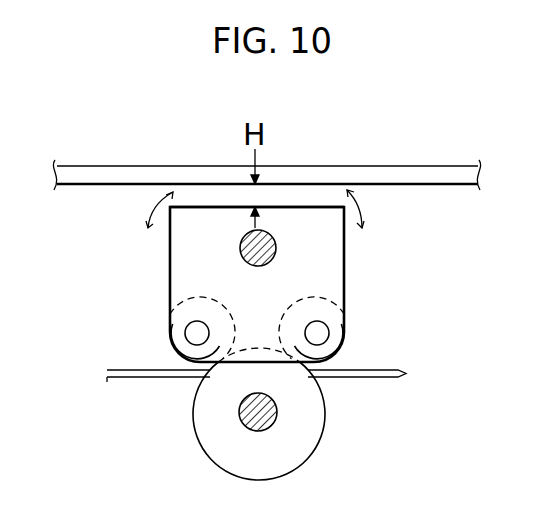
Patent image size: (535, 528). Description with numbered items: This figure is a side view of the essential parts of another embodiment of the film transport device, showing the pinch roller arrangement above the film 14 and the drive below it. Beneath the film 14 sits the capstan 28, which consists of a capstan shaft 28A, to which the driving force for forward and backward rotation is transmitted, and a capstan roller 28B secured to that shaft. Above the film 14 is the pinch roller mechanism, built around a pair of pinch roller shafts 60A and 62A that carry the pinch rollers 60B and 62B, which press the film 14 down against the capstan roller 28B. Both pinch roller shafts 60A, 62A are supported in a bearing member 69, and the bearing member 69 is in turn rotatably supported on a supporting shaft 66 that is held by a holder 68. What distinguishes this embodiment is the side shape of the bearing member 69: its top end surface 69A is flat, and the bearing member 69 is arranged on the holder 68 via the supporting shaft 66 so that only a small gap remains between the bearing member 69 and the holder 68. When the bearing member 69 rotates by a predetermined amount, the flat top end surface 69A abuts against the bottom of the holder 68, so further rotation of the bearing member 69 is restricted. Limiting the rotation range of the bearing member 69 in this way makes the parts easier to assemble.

The film 14 is at (380, 362).
The capstan 28 is at (280, 414).
The capstan shaft 28A is at (240, 404).
The capstan roller 28B is at (319, 440).
The pinch roller shaft 60A is at (330, 335).
The pinch roller 60B is at (346, 322).
The pinch roller shaft 62A is at (170, 340).
The pinch roller 62B is at (165, 332).
The supporting shaft 66 is at (238, 248).
The holder 68 is at (398, 170).
The bearing member 69 is at (338, 275).
The top end surface 69A is at (197, 207).